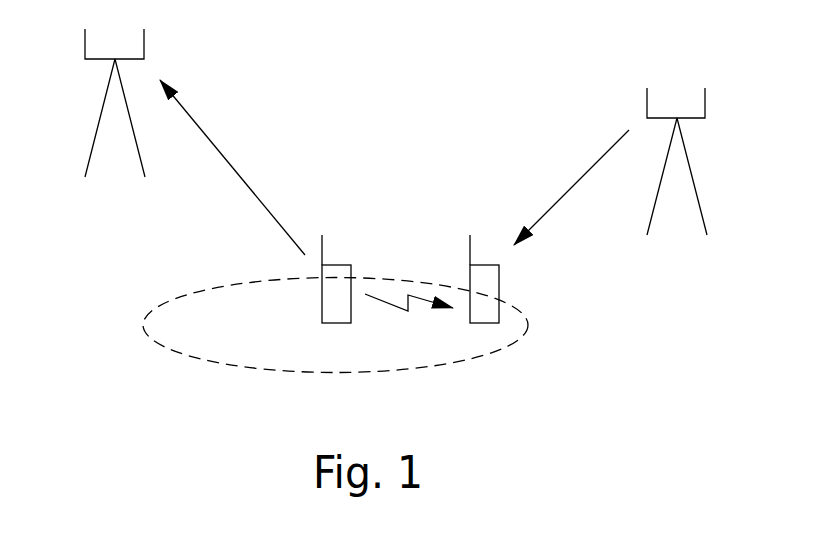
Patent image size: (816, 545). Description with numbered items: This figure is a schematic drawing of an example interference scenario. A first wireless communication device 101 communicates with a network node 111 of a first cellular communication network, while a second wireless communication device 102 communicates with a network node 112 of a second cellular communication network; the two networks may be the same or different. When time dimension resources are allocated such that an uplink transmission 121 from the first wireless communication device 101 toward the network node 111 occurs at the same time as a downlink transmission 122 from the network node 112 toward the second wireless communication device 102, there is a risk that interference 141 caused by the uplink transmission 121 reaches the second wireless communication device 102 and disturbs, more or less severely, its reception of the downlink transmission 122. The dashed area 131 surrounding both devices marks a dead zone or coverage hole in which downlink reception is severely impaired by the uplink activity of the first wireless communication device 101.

The first wireless communication device 101 is at (336, 279).
The second wireless communication device 102 is at (484, 279).
The network node 111 is at (95, 128).
The network node 112 is at (697, 187).
The uplink transmission 121 is at (238, 177).
The downlink transmission 122 is at (568, 187).
The area 131 is at (143, 323).
The interference 141 is at (392, 307).